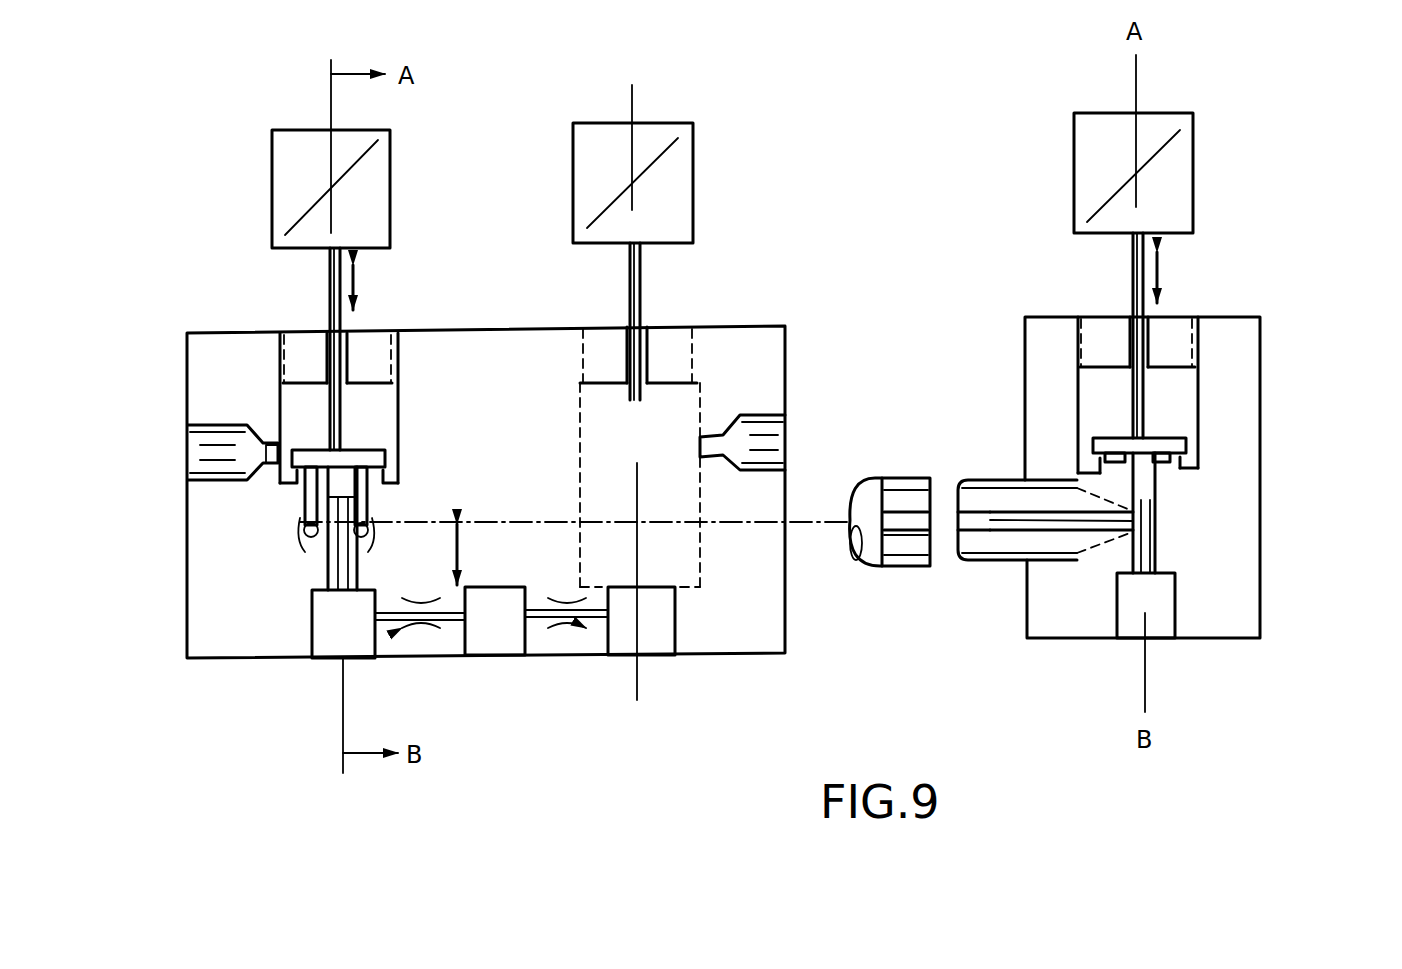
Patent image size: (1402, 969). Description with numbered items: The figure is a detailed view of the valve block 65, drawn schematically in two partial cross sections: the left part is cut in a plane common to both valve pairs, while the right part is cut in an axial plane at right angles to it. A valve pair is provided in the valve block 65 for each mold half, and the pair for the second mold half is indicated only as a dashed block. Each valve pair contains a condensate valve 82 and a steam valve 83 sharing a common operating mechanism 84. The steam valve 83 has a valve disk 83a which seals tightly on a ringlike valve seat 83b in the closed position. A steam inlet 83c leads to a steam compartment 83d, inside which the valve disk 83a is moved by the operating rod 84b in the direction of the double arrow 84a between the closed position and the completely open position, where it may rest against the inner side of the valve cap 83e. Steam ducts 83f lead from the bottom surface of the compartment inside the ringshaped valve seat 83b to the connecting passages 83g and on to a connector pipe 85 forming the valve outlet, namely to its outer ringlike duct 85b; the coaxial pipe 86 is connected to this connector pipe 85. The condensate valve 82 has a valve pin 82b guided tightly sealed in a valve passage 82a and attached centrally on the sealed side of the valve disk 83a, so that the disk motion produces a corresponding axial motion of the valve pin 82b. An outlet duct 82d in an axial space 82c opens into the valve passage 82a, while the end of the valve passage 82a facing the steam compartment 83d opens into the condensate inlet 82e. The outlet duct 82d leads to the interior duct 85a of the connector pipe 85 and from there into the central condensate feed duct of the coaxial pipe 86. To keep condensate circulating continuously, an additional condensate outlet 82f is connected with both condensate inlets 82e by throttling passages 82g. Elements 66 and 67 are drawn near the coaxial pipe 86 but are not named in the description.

The valve block 65 is at (762, 635).
The condensate valve 82 is at (273, 577).
The valve passage 82a is at (320, 560).
The valve pin 82b is at (340, 580).
The axial space 82c is at (462, 555).
The outlet duct 82d is at (1108, 548).
The condensate inlet 82e is at (653, 632).
The additional condensate outlet 82f is at (503, 640).
The throttling passages 82g is at (428, 622).
The steam valve 83 is at (267, 417).
The valve disk 83a is at (372, 452).
The valve seat 83b is at (382, 477).
The steam inlet 83c is at (190, 433).
The steam compartment 83d is at (378, 403).
The valve cap 83e is at (362, 348).
The steam ducts 83f is at (302, 493).
The connecting passages 83g is at (305, 540).
The operating mechanism 84 is at (388, 192).
The double arrow 84a is at (358, 296).
The operating rod 84b is at (330, 290).
The connector pipe 85 is at (988, 455).
The interior duct 85a is at (988, 524).
The outer ringlike duct 85b is at (1022, 540).
The coaxial pipe 86 is at (865, 468).
The tube 66 is at (912, 515).
The tube end 67 is at (900, 548).